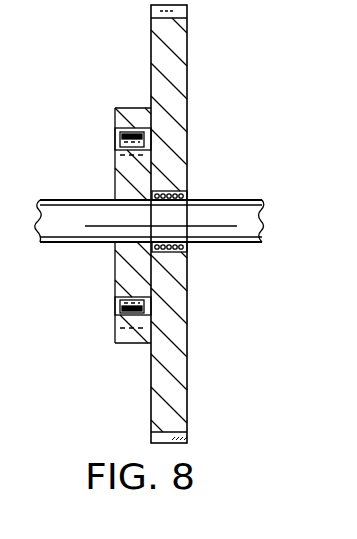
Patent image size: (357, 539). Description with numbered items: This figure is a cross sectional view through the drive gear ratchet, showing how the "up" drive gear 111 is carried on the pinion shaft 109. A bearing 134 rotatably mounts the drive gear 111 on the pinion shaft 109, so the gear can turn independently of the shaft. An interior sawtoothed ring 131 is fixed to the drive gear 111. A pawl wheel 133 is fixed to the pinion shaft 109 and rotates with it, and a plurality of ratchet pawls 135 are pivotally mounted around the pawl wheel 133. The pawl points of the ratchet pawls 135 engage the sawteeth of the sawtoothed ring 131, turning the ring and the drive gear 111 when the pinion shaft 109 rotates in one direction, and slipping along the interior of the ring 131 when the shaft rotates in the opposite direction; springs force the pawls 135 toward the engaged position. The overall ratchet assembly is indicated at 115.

The "up" drive gear 111 is at (157, 43).
The pinion shaft 109 is at (82, 232).
The bearing assembly 115 is at (98, 162).
The interior sawtoothed ring 131 is at (130, 107).
The pawl wheel 133 is at (125, 278).
The ratchet pawls 135 is at (115, 138).
The bearing 134 is at (176, 195).